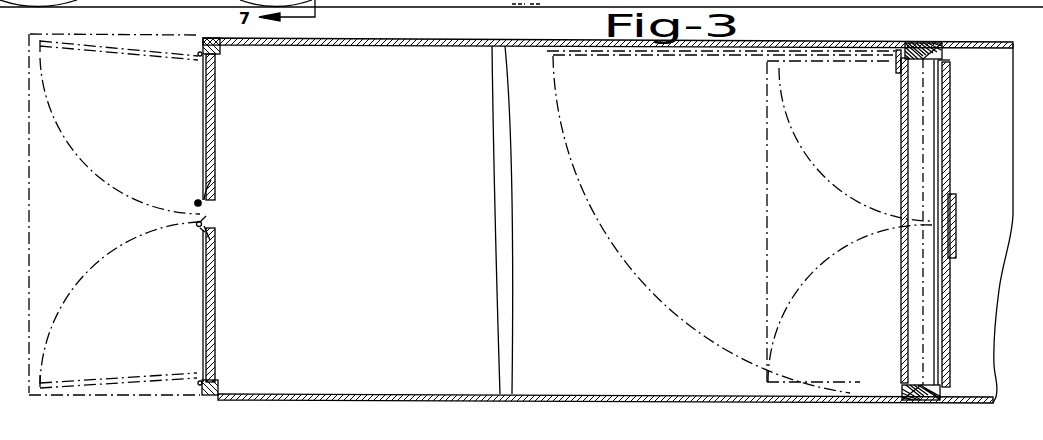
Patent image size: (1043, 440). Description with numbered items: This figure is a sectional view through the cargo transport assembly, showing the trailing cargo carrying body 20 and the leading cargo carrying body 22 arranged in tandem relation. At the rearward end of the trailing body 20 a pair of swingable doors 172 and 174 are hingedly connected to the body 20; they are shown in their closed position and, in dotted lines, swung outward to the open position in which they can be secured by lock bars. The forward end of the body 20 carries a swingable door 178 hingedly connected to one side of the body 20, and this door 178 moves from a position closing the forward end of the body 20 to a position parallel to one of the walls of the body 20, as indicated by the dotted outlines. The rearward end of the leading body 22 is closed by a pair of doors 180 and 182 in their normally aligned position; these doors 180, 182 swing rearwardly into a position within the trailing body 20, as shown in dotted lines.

The trailing cargo carrying body 20 is at (455, 40).
The leading cargo carrying body 22 is at (986, 43).
The swingable door 172 is at (104, 52).
The swingable door 174 is at (214, 256).
The swingable door 178 is at (692, 57).
The door 180 is at (950, 128).
The door 182 is at (949, 290).